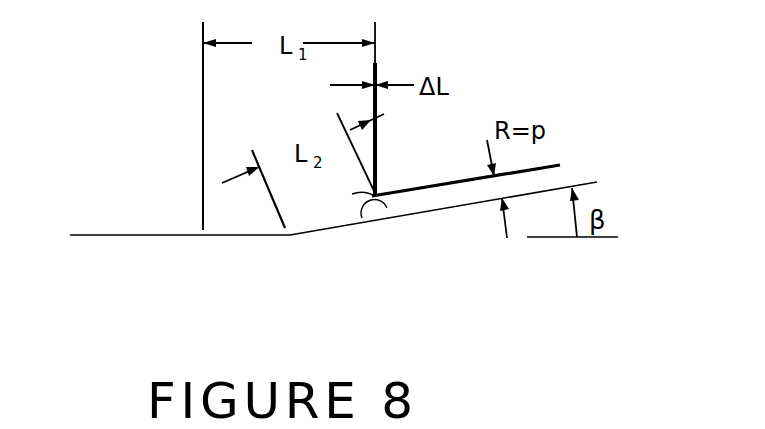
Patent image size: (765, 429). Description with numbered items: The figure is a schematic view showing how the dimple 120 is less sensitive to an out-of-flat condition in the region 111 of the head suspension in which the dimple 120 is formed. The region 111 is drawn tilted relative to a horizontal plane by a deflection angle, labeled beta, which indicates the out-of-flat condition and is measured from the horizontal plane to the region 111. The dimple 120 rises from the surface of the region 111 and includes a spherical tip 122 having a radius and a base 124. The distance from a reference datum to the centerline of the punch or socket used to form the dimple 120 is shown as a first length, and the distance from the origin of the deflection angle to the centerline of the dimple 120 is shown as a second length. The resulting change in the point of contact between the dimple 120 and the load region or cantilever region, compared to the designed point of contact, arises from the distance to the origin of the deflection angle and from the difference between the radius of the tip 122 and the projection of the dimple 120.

The region 111 is at (240, 236).
The dimple 120 is at (378, 213).
The spherical tip 122 is at (352, 194).
The base 124 is at (393, 210).